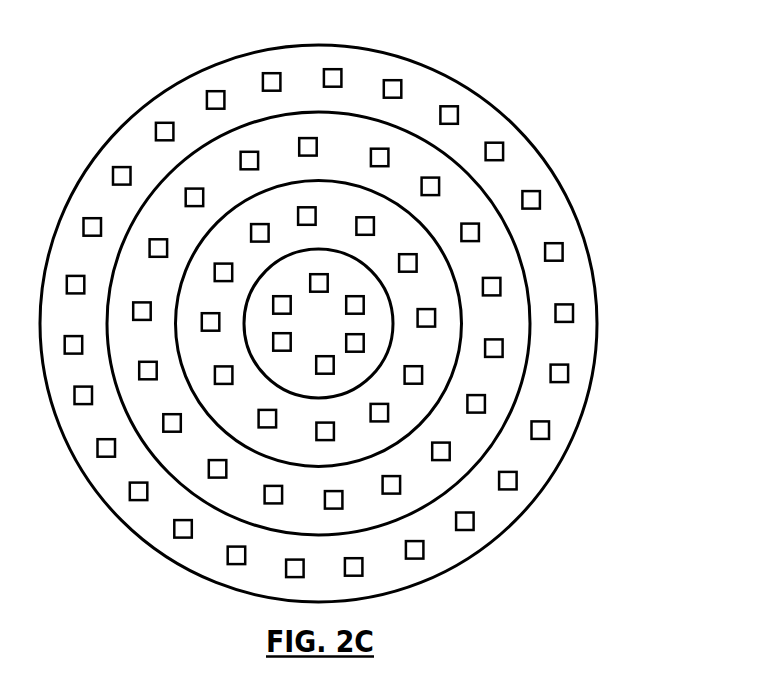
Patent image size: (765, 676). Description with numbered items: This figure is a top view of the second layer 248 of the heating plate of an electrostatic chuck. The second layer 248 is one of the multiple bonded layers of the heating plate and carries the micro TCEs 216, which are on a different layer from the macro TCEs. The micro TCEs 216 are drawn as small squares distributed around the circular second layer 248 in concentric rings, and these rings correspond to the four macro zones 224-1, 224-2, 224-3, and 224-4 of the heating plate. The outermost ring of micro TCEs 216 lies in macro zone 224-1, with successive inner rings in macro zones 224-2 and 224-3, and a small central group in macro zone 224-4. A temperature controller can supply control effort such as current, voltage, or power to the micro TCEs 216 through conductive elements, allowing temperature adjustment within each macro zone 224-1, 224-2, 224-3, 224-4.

The second layer 248 is at (143, 110).
The micro TCEs 216 is at (398, 90).
The macro zone 224-1 is at (346, 299).
The macro zone 224-2 is at (510, 318).
The macro zone 224-3 is at (400, 410).
The macro zone 224-4 is at (325, 383).